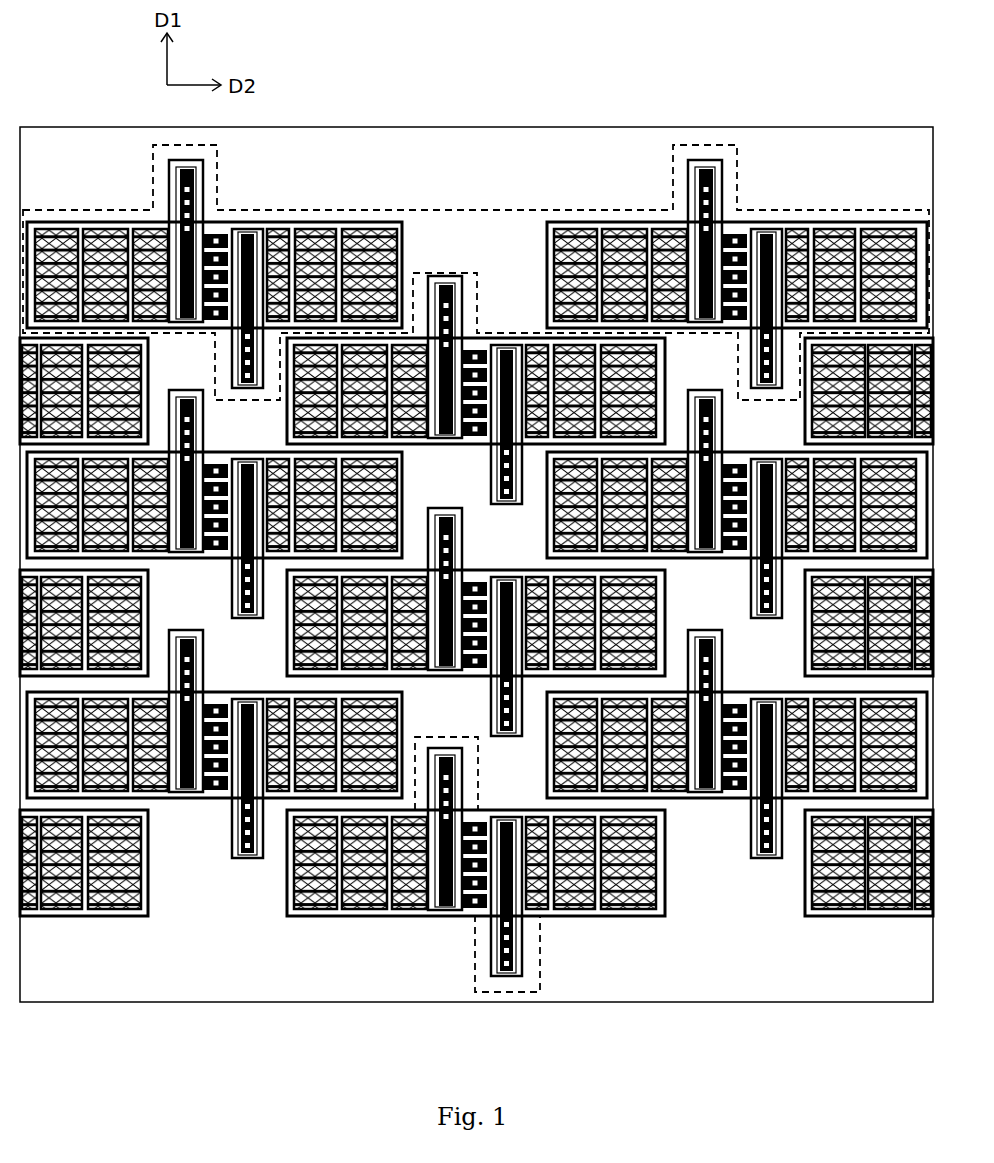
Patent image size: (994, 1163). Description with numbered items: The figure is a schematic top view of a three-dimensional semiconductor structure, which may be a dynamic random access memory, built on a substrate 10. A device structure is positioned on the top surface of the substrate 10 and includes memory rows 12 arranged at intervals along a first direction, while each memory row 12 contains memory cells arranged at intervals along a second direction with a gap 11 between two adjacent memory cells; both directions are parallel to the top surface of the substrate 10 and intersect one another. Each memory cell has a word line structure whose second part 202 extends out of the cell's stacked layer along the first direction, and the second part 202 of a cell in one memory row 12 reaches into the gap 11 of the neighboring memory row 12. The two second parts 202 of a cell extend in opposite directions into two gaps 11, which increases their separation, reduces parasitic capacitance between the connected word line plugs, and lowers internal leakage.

The substrate 10 is at (818, 1001).
The gap 11 is at (492, 235).
The memory row 12 is at (376, 212).
The second part of word line structure 202 is at (415, 770).